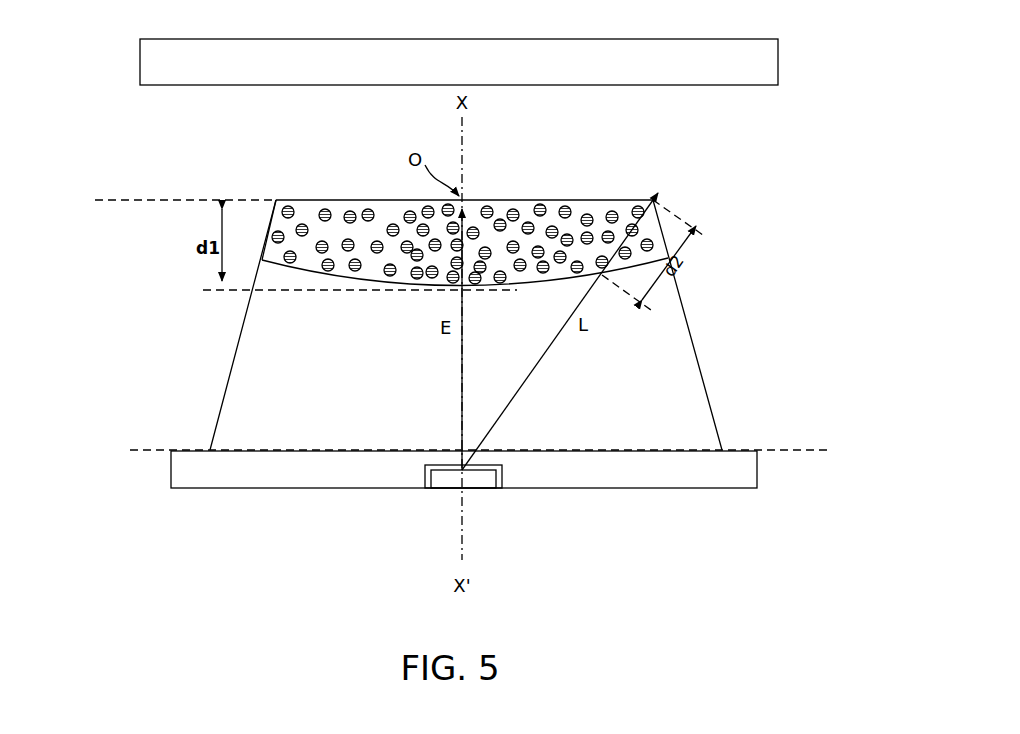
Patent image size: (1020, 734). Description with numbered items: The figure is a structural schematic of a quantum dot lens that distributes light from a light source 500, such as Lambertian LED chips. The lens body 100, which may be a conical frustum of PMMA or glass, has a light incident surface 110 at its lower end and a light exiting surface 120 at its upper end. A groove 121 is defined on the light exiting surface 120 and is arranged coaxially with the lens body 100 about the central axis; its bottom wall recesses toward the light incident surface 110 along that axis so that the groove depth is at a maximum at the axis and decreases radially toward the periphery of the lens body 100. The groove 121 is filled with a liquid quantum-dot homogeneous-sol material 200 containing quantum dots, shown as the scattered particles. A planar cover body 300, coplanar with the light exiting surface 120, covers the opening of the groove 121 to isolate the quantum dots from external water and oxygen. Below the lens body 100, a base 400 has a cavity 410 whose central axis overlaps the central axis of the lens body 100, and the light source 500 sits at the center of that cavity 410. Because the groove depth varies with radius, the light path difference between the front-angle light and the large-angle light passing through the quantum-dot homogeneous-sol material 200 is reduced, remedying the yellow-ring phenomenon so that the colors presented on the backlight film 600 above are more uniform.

The backlight film 600 is at (140, 60).
The light exiting surface 120 is at (140, 197).
The groove 121 is at (277, 206).
The cover body 300 is at (407, 196).
The quantum-dot homogeneous-sol material 200 is at (608, 211).
The lens body 100 is at (214, 433).
The light incident surface 110 is at (784, 446).
The base 400 is at (171, 468).
The cavity 410 is at (421, 478).
The light source 500 is at (475, 478).